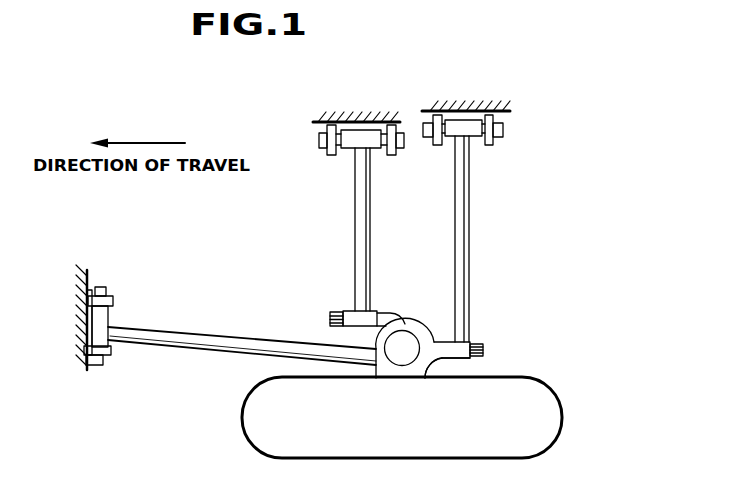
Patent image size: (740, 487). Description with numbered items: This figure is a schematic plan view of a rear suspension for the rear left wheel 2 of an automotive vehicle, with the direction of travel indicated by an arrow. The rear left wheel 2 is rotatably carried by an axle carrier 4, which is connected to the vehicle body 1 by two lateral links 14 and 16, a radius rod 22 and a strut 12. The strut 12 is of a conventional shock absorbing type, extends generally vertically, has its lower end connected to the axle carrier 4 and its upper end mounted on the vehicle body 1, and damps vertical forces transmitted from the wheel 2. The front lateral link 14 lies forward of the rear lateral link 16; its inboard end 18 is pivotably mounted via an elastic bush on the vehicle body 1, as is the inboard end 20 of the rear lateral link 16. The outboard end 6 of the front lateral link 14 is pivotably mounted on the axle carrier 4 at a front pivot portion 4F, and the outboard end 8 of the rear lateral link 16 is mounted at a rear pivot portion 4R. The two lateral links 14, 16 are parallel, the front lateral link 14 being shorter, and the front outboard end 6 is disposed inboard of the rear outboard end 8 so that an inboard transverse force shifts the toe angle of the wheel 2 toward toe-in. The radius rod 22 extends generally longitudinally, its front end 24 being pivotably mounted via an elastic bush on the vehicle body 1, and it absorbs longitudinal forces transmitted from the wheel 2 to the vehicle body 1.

The vehicle body 1 is at (508, 122).
The rear left wheel 2 is at (562, 418).
The axle carrier 4 is at (437, 310).
The front pivot portion 4F is at (390, 310).
The rear pivot portion 4R is at (433, 354).
The outboard end of front lateral link 6 is at (352, 310).
The outboard end of rear lateral link 8 is at (463, 347).
The strut 12 is at (393, 366).
The front lateral link 14 is at (355, 215).
The rear lateral link 16 is at (468, 213).
The inboard end of front lateral link 18 is at (352, 149).
The inboard end of rear lateral link 20 is at (472, 138).
The radius rod 22 is at (168, 338).
The front end of radius rod 24 is at (112, 318).